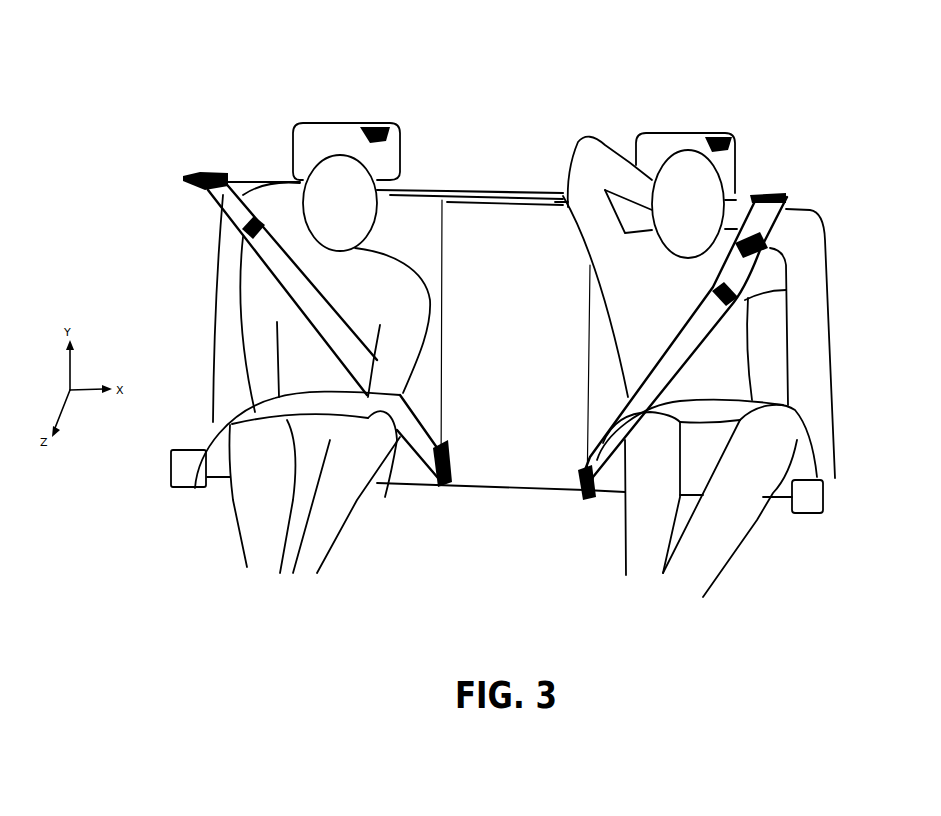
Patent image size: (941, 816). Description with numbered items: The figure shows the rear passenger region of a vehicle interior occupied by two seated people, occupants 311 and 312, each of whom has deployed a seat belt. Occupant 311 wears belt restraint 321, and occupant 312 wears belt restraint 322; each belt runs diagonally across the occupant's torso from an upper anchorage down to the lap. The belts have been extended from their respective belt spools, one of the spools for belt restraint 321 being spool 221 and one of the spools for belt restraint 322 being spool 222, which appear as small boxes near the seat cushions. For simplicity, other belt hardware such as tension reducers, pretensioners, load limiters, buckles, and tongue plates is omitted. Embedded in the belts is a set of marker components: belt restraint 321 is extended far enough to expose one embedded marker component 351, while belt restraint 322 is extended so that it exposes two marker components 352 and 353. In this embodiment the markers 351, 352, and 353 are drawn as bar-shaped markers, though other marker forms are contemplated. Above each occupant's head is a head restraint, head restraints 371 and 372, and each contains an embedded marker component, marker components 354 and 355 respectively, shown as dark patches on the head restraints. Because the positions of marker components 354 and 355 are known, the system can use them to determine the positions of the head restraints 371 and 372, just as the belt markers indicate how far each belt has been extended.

The spool 221 is at (197, 172).
The spool 222 is at (815, 498).
The occupant 311 is at (383, 277).
The occupant 312 is at (537, 196).
The belt restraint 321 is at (243, 177).
The belt restraint 322 is at (803, 202).
The marker component 351 is at (227, 230).
The marker component 352 is at (777, 197).
The marker component 353 is at (777, 247).
The marker component 354 is at (387, 132).
The marker component 355 is at (733, 133).
The head restraint 371 is at (337, 126).
The head restraint 372 is at (668, 150).